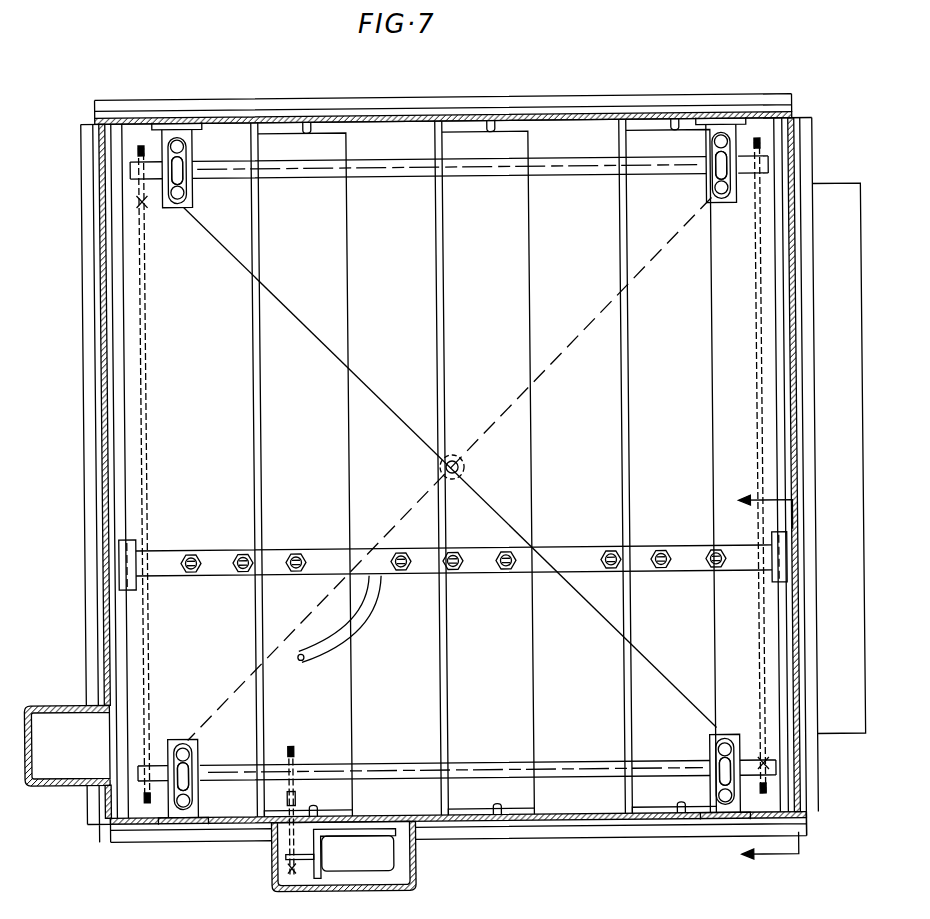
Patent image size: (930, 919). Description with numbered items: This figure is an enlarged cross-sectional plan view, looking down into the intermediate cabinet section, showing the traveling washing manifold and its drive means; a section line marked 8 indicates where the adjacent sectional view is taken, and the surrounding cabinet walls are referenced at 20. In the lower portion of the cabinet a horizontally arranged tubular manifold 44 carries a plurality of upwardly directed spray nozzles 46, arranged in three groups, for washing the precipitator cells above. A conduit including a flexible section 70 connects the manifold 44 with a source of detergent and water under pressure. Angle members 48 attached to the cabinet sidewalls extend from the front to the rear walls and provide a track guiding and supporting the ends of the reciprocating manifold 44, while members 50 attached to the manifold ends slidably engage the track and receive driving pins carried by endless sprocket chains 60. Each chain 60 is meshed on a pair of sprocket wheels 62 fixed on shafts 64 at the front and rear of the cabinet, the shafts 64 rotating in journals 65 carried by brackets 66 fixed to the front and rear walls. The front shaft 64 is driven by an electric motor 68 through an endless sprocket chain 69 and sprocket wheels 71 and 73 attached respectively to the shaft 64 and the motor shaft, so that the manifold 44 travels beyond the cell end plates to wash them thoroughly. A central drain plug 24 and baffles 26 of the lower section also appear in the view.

The housing frame 20 is at (608, 97).
The central drain plug 24 is at (455, 455).
The baffles 26 is at (440, 341).
The tubular manifold 44 is at (479, 575).
The spray nozzles 46 is at (302, 548).
The angle members 48 is at (126, 411).
The members 50 is at (137, 537).
The endless sprocket chains 60 is at (147, 362).
The sprocket wheels 62 is at (150, 210).
The shafts 64 is at (426, 176).
The journals 65 is at (184, 162).
The brackets 66 is at (196, 198).
The electric motor 68 is at (342, 862).
The endless sprocket chain 69 is at (293, 800).
The flexible section 70 is at (365, 623).
The sprocket wheel 71 is at (291, 748).
The sprocket wheel 73 is at (286, 866).
The section line 8- 8 is at (756, 682).